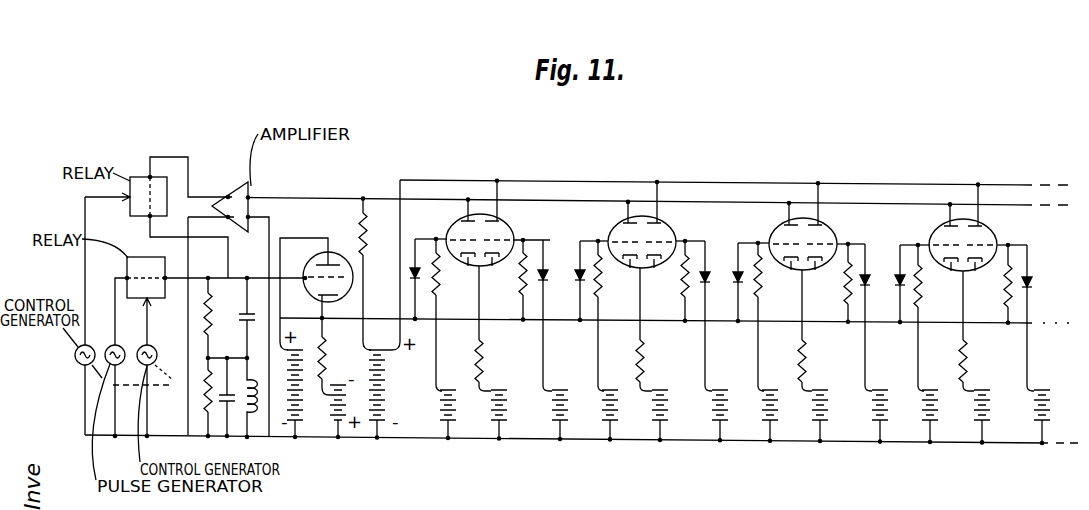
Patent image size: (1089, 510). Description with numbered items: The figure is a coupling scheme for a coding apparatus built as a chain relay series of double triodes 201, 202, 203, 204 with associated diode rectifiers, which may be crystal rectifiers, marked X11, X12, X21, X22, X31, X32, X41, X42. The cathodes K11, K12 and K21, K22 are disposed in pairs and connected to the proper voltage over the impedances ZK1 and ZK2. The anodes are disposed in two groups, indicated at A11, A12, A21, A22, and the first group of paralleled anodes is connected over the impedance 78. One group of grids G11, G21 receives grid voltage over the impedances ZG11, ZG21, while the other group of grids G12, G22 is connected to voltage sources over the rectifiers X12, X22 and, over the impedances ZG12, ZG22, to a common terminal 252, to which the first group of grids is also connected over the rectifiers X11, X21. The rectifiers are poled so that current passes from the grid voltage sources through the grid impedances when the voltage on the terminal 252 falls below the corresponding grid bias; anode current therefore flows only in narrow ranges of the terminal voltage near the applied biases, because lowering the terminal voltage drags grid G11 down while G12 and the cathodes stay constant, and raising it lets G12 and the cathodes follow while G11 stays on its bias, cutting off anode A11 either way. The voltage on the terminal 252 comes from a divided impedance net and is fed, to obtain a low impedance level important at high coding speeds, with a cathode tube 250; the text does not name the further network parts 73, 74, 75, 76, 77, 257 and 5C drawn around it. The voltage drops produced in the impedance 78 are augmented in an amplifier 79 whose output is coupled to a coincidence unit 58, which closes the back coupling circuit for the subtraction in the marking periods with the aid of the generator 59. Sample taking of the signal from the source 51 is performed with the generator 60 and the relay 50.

The coincidence unit 58 is at (139, 177).
The relay 50 is at (133, 257).
The generator 59 is at (107, 350).
The signal source 51 is at (123, 349).
The generator 60 is at (178, 331).
The amplifier 79 is at (238, 180).
The cathode tube 250 is at (305, 278).
The impedance 78 is at (352, 238).
The resistor 73 is at (214, 292).
The capacitor 74 is at (250, 298).
The resistor 75 is at (203, 415).
The capacitor 76 is at (228, 410).
The inductance coil 77 is at (258, 412).
The generator coupling 5C is at (132, 389).
The cathode resistor 257 is at (315, 378).
The common terminal 252 is at (830, 325).
The double triode 201 is at (457, 218).
The double triode 202 is at (617, 217).
The double triode 203 is at (808, 218).
The double triode 204 is at (967, 220).
The anode A11 is at (470, 222).
The anode A12 is at (500, 222).
The anode A21 is at (622, 222).
The anode A22 is at (665, 222).
The grid G11 is at (452, 238).
The grid G12 is at (505, 239).
The grid G21 is at (612, 237).
The grid G22 is at (670, 239).
The cathode K11 is at (468, 268).
The cathode K12 is at (494, 268).
The cathode K21 is at (623, 263).
The cathode K22 is at (660, 265).
The rectifier X11 is at (410, 268).
The rectifier X12 is at (545, 268).
The rectifier X21 is at (585, 300).
The rectifier X22 is at (708, 271).
The rectifier X31 is at (740, 271).
The rectifier X32 is at (868, 276).
The rectifier X41 is at (902, 274).
The rectifier X42 is at (1030, 279).
The grid impedance ZG11 is at (425, 282).
The grid impedance ZG12 is at (534, 322).
The grid impedance ZG21 is at (605, 300).
The grid impedance ZG22 is at (697, 300).
The cathode impedance ZK1 is at (470, 368).
The cathode impedance ZK2 is at (633, 367).